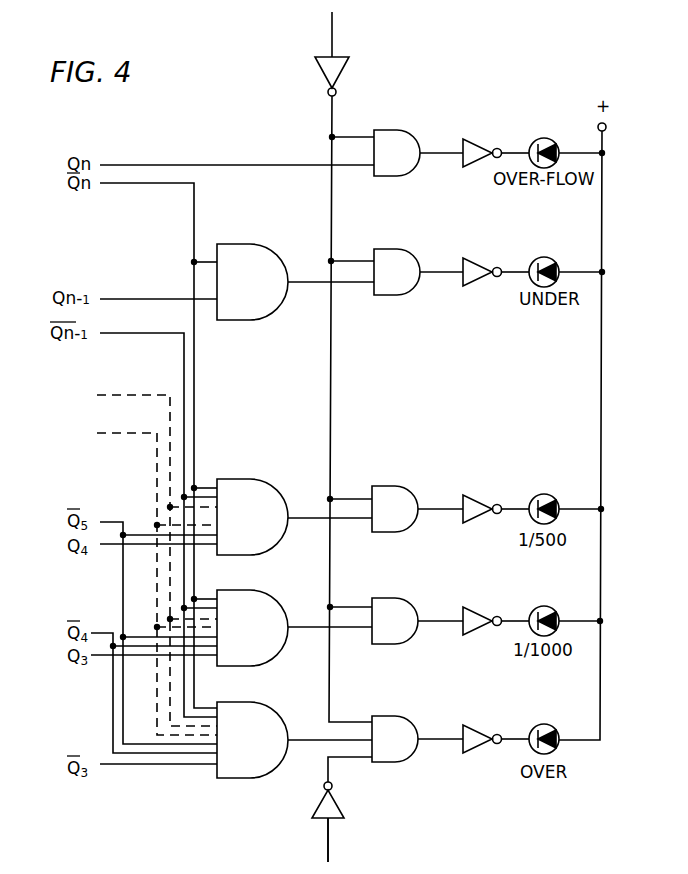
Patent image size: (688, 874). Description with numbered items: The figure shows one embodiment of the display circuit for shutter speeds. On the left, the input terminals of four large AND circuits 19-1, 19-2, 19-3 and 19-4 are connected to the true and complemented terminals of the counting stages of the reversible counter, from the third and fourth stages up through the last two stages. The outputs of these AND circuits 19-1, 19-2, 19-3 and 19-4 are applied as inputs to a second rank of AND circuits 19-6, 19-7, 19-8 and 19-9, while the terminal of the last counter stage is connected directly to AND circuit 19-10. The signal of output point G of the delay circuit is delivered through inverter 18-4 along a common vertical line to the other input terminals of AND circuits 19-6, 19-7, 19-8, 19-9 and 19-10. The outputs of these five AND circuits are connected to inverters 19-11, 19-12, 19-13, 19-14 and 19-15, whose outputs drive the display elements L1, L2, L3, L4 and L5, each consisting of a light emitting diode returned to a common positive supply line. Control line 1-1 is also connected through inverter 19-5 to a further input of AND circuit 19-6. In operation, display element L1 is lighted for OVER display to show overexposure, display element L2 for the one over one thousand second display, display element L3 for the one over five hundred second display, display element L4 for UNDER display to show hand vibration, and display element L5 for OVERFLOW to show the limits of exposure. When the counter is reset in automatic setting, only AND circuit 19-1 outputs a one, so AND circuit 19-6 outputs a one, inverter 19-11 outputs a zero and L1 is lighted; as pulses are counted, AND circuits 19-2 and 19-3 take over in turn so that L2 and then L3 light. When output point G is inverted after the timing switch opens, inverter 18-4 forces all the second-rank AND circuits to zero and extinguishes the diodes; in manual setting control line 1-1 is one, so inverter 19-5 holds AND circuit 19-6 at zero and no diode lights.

The output point of delay circuit G is at (336, 41).
The inverter 18-4 is at (349, 63).
The AND circuit 19-1 is at (251, 708).
The AND circuit 19-2 is at (252, 597).
The AND circuit 19-3 is at (251, 484).
The AND circuit 19-4 is at (247, 249).
The inverter 19-5 is at (337, 800).
The AND circuit 19-6 is at (396, 716).
The AND circuit 19-7 is at (396, 601).
The AND circuit 19-8 is at (398, 490).
The AND circuit 19-9 is at (395, 253).
The AND circuit 19-10 is at (392, 133).
The inverter 19-11 is at (467, 725).
The inverter 19-12 is at (467, 607).
The inverter 19-13 is at (468, 497).
The inverter 19-14 is at (467, 262).
The inverter 19-15 is at (472, 140).
The control line 1-1 is at (328, 840).
The display element L1 is at (543, 723).
The display element L2 is at (543, 605).
The display element L3 is at (543, 493).
The display element L4 is at (543, 256).
The display element L5 is at (543, 137).